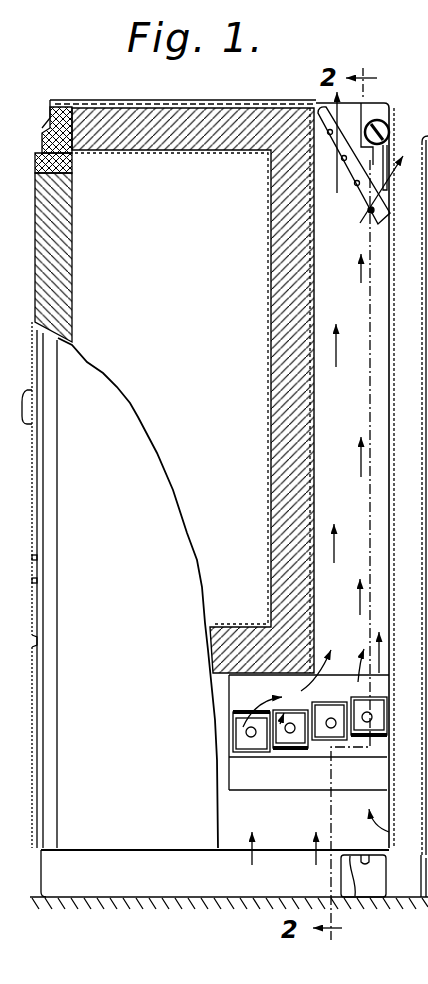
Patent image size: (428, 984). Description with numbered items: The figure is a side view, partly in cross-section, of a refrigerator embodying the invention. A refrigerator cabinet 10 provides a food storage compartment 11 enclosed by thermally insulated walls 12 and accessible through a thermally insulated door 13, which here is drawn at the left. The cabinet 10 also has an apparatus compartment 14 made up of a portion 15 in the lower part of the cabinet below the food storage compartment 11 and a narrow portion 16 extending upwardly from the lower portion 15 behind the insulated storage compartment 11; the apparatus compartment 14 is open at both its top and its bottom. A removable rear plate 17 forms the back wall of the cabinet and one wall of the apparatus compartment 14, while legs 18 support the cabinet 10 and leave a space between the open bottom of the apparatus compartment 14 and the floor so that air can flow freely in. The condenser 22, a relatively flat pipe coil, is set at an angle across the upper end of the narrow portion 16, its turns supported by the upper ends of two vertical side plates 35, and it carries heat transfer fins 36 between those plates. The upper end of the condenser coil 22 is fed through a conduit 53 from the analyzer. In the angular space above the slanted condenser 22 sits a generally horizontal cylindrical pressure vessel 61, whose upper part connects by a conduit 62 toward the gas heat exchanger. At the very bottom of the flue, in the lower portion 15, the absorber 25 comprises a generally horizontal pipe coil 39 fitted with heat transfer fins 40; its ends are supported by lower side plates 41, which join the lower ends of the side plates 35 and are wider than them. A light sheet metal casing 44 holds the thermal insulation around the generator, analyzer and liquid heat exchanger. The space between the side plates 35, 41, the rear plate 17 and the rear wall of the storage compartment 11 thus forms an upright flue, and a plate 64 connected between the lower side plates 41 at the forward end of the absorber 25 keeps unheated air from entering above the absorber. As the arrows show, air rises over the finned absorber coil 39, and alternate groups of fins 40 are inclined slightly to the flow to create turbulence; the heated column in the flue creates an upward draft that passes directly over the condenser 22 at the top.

The refrigerator cabinet 10 is at (207, 100).
The food storage compartment 11 is at (171, 388).
The thermally insulated walls 12 is at (208, 152).
The thermally insulated door 13 is at (62, 248).
The apparatus compartment 14 is at (377, 568).
The lower portion of apparatus compartment 15 is at (295, 712).
The narrow portion of apparatus compartment 16 is at (352, 391).
The removable rear plate 17 is at (392, 369).
The legs 18 is at (88, 852).
The condenser 22 is at (357, 185).
The absorber 25 is at (240, 731).
The side plates 35 is at (379, 304).
The heat transfer fins 36 is at (358, 207).
The absorber pipe coil 39 is at (372, 718).
The heat transfer fins 40 is at (297, 749).
The side plates 41 is at (377, 684).
The sheet metal casing 44 is at (240, 773).
The conduit 53 is at (427, 137).
The pressure vessel 61 is at (385, 127).
The conduit 62 is at (377, 120).
The plate 64 is at (226, 700).